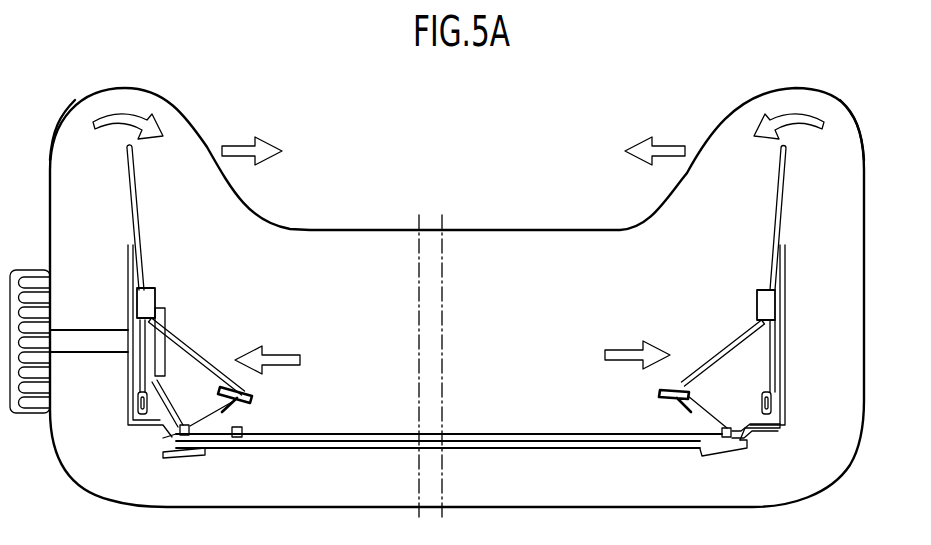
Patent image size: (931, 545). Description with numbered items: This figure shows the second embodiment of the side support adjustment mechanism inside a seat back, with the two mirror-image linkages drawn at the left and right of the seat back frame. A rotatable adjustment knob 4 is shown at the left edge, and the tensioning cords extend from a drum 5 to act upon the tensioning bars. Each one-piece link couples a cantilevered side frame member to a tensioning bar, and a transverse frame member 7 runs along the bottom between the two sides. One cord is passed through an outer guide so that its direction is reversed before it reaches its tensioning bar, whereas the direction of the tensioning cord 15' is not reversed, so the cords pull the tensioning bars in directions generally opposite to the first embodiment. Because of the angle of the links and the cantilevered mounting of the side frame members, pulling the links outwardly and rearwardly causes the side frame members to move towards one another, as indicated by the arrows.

The adjustment knob 4 is at (17, 414).
The drum 5 is at (166, 318).
The transverse frame member 7 is at (335, 448).
The tensioning cord 15' is at (179, 399).